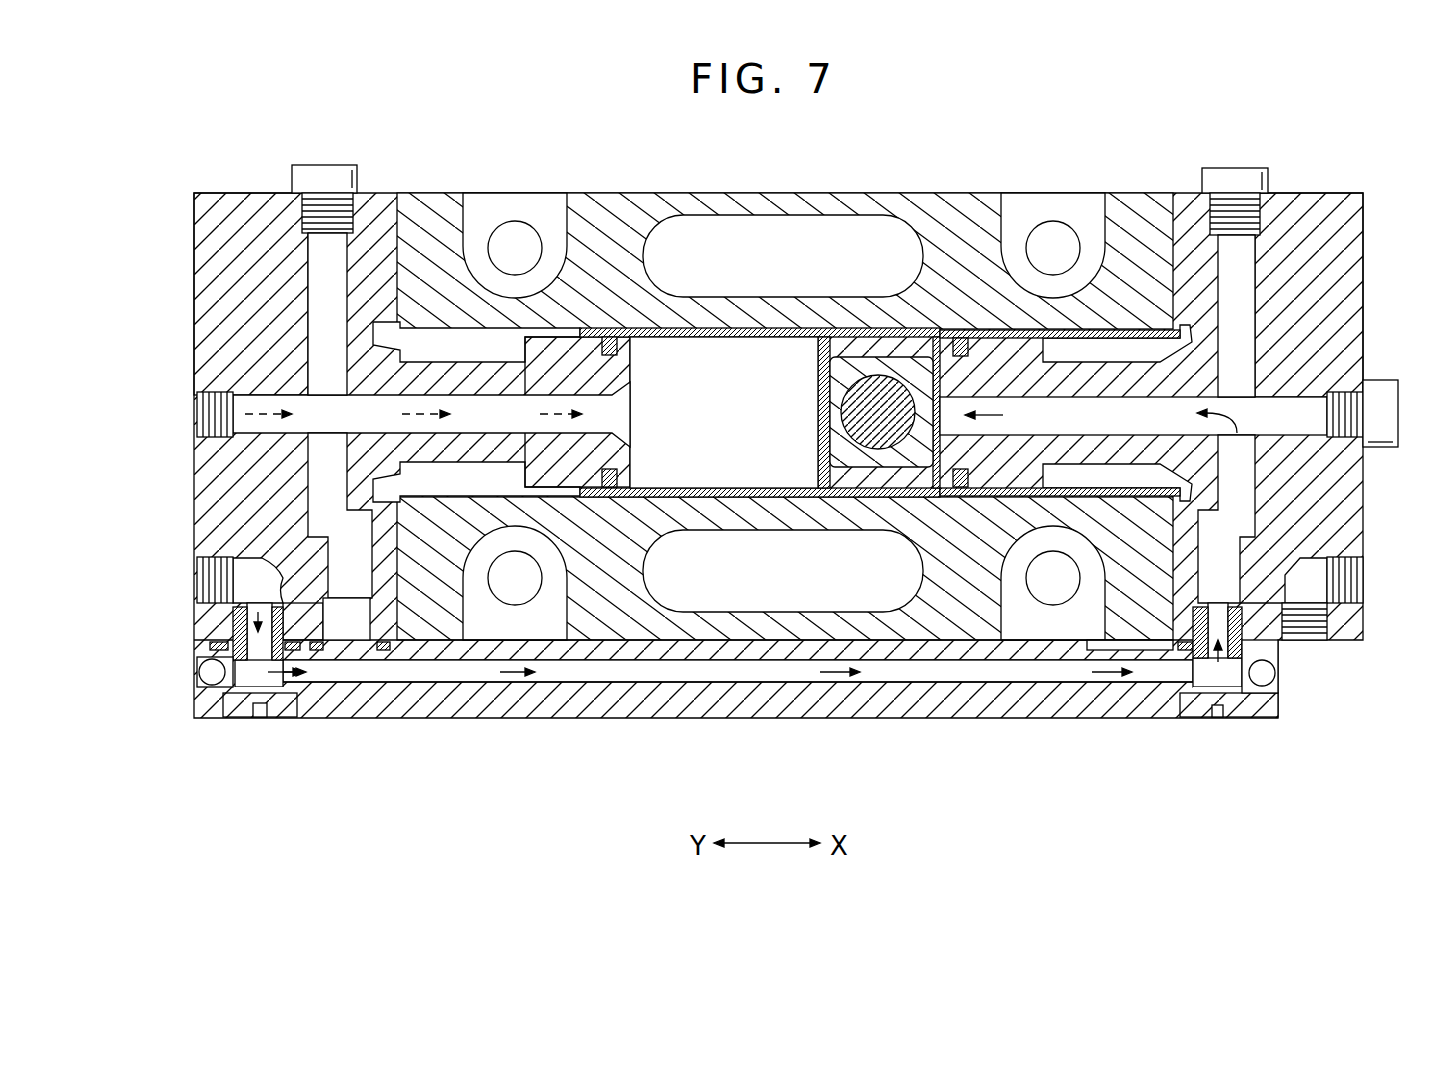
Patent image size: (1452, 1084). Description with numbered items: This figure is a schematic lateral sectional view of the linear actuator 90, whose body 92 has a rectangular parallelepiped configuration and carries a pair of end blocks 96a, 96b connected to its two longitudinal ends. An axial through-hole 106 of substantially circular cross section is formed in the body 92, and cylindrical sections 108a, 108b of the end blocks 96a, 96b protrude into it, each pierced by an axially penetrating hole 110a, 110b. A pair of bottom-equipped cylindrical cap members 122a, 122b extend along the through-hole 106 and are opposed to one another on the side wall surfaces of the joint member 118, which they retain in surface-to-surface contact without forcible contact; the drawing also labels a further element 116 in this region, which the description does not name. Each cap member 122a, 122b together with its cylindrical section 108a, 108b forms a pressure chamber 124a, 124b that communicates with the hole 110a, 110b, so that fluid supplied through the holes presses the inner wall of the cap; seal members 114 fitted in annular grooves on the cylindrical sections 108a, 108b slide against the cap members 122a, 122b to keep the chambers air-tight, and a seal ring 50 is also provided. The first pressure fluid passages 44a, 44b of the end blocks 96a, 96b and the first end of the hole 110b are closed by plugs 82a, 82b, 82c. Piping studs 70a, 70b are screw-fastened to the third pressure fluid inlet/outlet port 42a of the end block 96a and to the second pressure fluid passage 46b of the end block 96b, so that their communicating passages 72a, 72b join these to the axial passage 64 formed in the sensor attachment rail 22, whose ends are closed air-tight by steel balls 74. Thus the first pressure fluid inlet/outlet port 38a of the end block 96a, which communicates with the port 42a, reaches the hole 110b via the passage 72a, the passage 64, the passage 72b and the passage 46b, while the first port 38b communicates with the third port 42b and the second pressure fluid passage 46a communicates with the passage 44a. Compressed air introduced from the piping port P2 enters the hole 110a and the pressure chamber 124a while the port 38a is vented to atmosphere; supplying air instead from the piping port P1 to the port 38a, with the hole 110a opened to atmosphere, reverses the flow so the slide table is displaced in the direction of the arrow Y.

The linear actuator 90 is at (1312, 103).
The body 92 is at (806, 190).
The end block 96a is at (240, 193).
The end block 96b is at (1345, 236).
The cylindrical section 108a is at (458, 370).
The cylindrical section 108b is at (1150, 370).
The cap member 122a is at (702, 322).
The cap member 122b is at (975, 320).
The first pressure fluid passage 44a is at (303, 307).
The first pressure fluid passage 44b is at (1250, 305).
The hole 110a is at (586, 395).
The hole 110b is at (1137, 407).
The pressure chamber 124a is at (751, 428).
The pressure chamber 124b is at (1104, 428).
The valve body 116 is at (890, 383).
The joint member 118 is at (871, 375).
The piping port P2 is at (185, 412).
The piping port P1 is at (185, 578).
The plug 82a is at (292, 163).
The plug 82b is at (1387, 385).
The plug 82c is at (1250, 173).
The second pressure fluid passage 46a is at (362, 575).
The second pressure fluid passage 46b is at (1235, 552).
The seal member 114 is at (607, 490).
The through-hole 106 is at (480, 652).
The passage 64 is at (740, 674).
The sensor attachment rail 22 is at (872, 725).
The seal ring 50 is at (210, 645).
The first pressure fluid inlet/outlet port 38a is at (262, 585).
The first pressure fluid inlet/outlet port 38b is at (1427, 589).
The third pressure fluid inlet/outlet port 42a is at (305, 620).
The third pressure fluid inlet/outlet port 42b is at (1300, 620).
The piping stud 70a is at (262, 625).
The piping stud 70b is at (1235, 720).
The communicating passage 72a is at (255, 690).
The communicating passage 72b is at (1210, 690).
The steel ball 74 is at (200, 675).